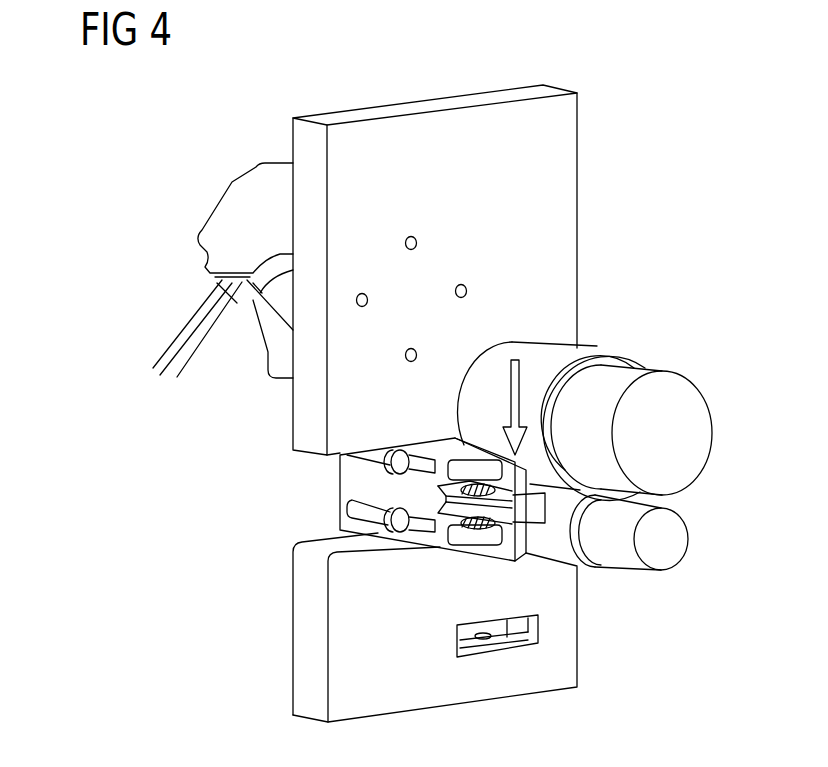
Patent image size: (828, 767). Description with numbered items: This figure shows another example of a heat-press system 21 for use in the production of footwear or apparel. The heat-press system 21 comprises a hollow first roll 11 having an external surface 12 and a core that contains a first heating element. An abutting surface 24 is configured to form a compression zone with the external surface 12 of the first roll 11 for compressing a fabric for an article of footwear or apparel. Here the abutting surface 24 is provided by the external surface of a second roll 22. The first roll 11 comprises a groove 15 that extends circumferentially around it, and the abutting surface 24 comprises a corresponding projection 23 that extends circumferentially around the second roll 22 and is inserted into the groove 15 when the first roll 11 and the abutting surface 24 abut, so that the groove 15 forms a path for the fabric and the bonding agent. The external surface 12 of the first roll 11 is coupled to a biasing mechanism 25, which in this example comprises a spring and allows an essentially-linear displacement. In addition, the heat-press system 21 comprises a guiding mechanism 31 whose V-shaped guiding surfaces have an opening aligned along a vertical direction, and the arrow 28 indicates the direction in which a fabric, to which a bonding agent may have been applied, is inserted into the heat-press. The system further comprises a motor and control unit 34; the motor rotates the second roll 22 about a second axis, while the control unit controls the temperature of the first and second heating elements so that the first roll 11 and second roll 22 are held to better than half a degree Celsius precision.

The first roll 11 is at (486, 534).
The external surface 12 is at (557, 549).
The groove 15 is at (602, 567).
The heat-press system 21 is at (150, 173).
The second roll 22 is at (697, 433).
The projection 23 is at (620, 357).
The abutting surface 24 is at (553, 355).
The biasing mechanism 25 is at (493, 637).
The arrow 28 is at (518, 346).
The guiding mechanism 31 is at (350, 488).
The motor and control unit 34 is at (242, 186).